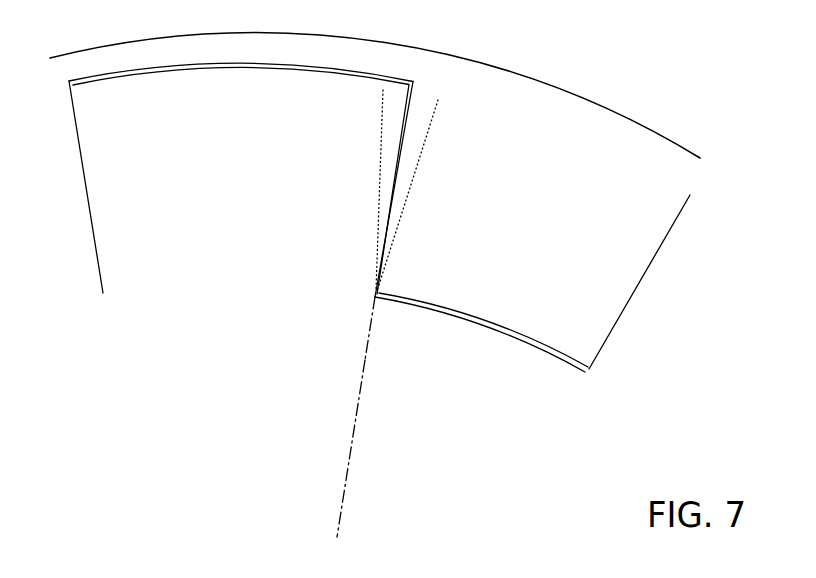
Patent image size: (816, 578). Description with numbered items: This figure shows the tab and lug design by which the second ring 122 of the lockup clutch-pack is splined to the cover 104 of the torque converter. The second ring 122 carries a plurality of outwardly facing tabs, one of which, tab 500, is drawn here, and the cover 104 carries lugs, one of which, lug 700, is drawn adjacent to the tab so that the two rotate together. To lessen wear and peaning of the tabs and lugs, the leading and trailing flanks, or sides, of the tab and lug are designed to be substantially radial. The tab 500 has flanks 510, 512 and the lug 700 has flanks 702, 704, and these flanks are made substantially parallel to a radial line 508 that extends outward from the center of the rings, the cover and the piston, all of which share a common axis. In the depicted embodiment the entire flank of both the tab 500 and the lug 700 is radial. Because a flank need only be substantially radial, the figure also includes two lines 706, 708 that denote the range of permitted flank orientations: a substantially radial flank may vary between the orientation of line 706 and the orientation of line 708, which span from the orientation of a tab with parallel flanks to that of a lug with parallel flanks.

The cover 104 is at (456, 88).
The tab 500 is at (258, 189).
The lug 700 is at (523, 249).
The flank 702 is at (394, 220).
The flank 704 is at (622, 305).
The line 706 is at (378, 148).
The line 708 is at (431, 127).
The flank 510 is at (380, 167).
The flank 512 is at (98, 248).
The second ring 122 is at (366, 352).
The radial line 508 is at (347, 472).